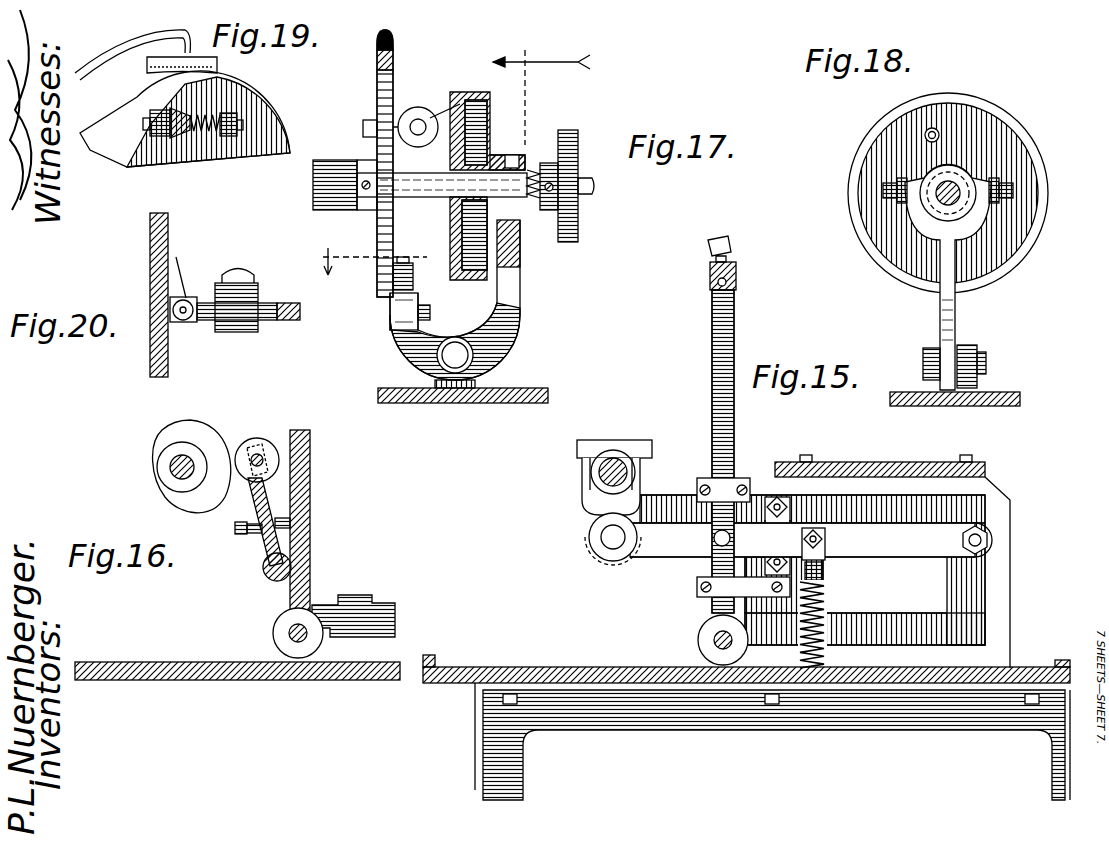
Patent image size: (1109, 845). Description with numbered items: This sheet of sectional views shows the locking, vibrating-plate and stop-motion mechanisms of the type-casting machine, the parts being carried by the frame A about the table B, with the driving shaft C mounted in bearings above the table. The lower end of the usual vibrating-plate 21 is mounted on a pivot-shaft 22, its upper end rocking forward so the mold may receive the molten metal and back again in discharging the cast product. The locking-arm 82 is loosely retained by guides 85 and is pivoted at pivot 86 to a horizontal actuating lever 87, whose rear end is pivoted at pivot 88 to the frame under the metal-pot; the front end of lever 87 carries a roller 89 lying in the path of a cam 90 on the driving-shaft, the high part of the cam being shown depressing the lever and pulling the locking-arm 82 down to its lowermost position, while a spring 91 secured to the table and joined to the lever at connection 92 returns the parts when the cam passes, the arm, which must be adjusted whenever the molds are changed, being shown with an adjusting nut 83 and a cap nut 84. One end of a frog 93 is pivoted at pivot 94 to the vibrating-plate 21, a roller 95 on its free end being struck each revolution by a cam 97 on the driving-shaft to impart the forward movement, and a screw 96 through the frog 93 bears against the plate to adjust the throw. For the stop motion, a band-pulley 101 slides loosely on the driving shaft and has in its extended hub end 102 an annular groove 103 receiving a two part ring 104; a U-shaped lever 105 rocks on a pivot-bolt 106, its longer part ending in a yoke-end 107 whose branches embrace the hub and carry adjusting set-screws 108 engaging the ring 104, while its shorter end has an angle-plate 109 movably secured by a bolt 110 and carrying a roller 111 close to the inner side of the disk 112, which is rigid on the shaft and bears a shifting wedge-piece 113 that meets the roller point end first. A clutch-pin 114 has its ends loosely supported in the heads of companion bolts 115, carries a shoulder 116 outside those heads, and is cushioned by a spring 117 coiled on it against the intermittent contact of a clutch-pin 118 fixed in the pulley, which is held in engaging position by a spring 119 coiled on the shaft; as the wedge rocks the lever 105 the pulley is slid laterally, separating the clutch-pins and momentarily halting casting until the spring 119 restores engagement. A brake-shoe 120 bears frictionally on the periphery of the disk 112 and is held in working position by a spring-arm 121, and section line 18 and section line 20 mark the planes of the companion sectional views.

In FIG. 17, the section line of Fig. 18 is at (541, 83).
In FIG. 17, the section line of Fig. 20 is at (320, 257).
In FIG. 20, the section line of Fig. 20 is at (297, 260).
In FIG. 16, the vibrating-plate 21 is at (310, 538).
In FIG. 16, the pivot-shaft 22 is at (290, 635).
In FIG. 15, the pivot-shaft 22 is at (713, 640).
In FIG. 15, the locking-arm 82 is at (722, 380).
In FIG. 15, the adjusting nut 83 is at (740, 284).
In FIG. 15, the cap nut 84 is at (728, 238).
In FIG. 15, the guides 85 is at (730, 480).
In FIG. 15, the pivot 86 is at (713, 539).
In FIG. 15, the horizontal actuating lever 87 is at (665, 552).
In FIG. 15, the pivot 88 is at (988, 542).
In FIG. 15, the roller 89 is at (606, 560).
In FIG. 15, the cam 90 is at (600, 498).
In FIG. 15, the spring 91 is at (827, 648).
In FIG. 15, the connection 92 is at (826, 540).
In FIG. 16, the frog 93 is at (260, 503).
In FIG. 16, the pivot 94 is at (265, 578).
In FIG. 16, the roller 95 is at (262, 448).
In FIG. 16, the screw 96 is at (240, 533).
In FIG. 16, the cam 97 is at (212, 445).
In FIG. 17, the band-pulley 101 is at (470, 92).
In FIG. 18, the band-pulley 101 is at (1020, 142).
In FIG. 17, the extended hub end 102 is at (495, 157).
In FIG. 18, the extended hub end 102 is at (963, 178).
In FIG. 17, the annular groove 103 is at (515, 152).
In FIG. 18, the annular groove 103 is at (953, 165).
In FIG. 18, the two part ring 104 is at (958, 249).
In FIG. 17, the U-shaped lever 105 is at (520, 330).
In FIG. 18, the U-shaped lever 105 is at (945, 298).
In FIG. 20, the U-shaped lever 105 is at (292, 322).
In FIG. 17, the pivot-bolt 106 is at (488, 368).
In FIG. 18, the pivot-bolt 106 is at (990, 368).
In FIG. 20, the pivot-bolt 106 is at (240, 332).
In FIG. 17, the yoke-end 107 is at (518, 225).
In FIG. 18, the yoke-end 107 is at (962, 238).
In FIG. 18, the adjusting set-screws 108 is at (887, 195).
In FIG. 17, the angle-plate 109 is at (393, 306).
In FIG. 20, the angle-plate 109 is at (192, 322).
In FIG. 17, the bolt 110 is at (430, 314).
In FIG. 17, the roller 111 is at (413, 278).
In FIG. 20, the roller 111 is at (190, 297).
In FIG. 19, the disk 112 is at (135, 121).
In FIG. 17, the disk 112 is at (377, 260).
In FIG. 20, the disk 112 is at (160, 275).
In FIG. 20, the shifting wedge-piece 113 is at (201, 258).
In FIG. 19, the clutch-pin 114 is at (237, 125).
In FIG. 17, the clutch-pin 114 is at (418, 128).
In FIG. 19, the companion bolts 115 is at (227, 118).
In FIG. 17, the companion bolts 115 is at (400, 123).
In FIG. 19, the shoulder 116 is at (170, 125).
In FIG. 17, the shoulder 116 is at (488, 104).
In FIG. 19, the spring 117 is at (200, 130).
In FIG. 18, the clutch-pin 118 is at (925, 133).
In FIG. 17, the spring 119 is at (578, 166).
In FIG. 19, the brake-shoe 120 is at (148, 67).
In FIG. 17, the brake-shoe 120 is at (377, 68).
In FIG. 19, the spring-arm 121 is at (110, 43).
In FIG. 17, the spring-arm 121 is at (393, 38).
In FIG. 15, the frame A is at (560, 738).
In FIG. 17, the table B is at (409, 403).
In FIG. 18, the table B is at (1000, 396).
In FIG. 16, the table B is at (148, 680).
In FIG. 15, the table B is at (596, 660).
In FIG. 17, the driving shaft C is at (423, 214).
In FIG. 18, the driving shaft C is at (940, 190).
In FIG. 16, the driving shaft C is at (170, 468).
In FIG. 15, the driving shaft C is at (613, 462).